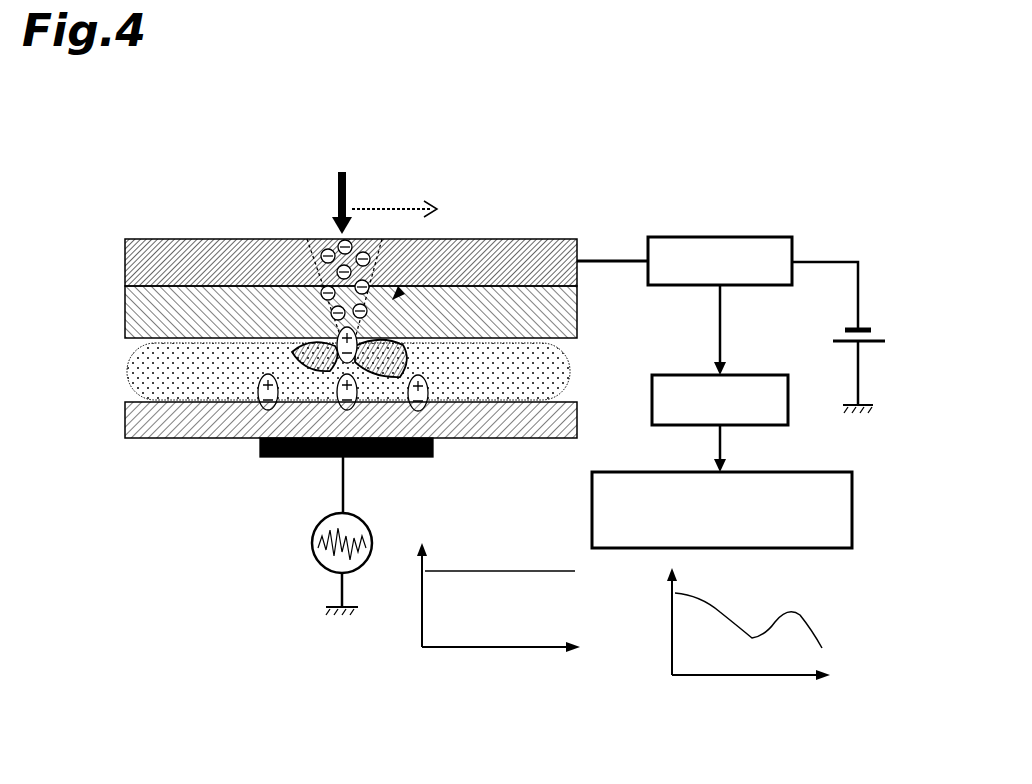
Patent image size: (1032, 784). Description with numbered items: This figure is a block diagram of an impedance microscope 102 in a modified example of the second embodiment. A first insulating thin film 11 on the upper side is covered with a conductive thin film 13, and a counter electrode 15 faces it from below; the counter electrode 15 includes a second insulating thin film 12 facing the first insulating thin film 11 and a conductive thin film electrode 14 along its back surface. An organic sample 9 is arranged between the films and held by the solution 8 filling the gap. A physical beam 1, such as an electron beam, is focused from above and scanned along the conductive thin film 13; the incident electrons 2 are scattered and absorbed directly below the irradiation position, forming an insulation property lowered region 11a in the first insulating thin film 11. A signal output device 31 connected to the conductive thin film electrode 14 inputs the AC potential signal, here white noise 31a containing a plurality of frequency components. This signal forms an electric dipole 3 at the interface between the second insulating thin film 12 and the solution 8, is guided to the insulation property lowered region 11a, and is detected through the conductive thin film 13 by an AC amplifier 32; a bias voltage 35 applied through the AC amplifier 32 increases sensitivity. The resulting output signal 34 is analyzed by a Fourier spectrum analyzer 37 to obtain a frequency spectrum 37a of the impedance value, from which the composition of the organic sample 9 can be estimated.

The physical beam 1 is at (336, 193).
The incident electrons 2 is at (325, 243).
The electric dipole 3 is at (425, 408).
The solution 8 is at (130, 370).
The organic sample 9 is at (410, 360).
The first insulating thin film 11 is at (128, 298).
The insulation property lowered region 11a is at (400, 294).
The second insulating thin film 12 is at (245, 440).
The conductive thin film 13 is at (173, 238).
The conductive thin film electrode 14 is at (295, 458).
The counter electrode 15 is at (218, 450).
The signal output device 31 is at (313, 553).
The white noise 31a is at (414, 652).
The AC amplifier 32 is at (684, 261).
The output signal 34 is at (720, 355).
The bias voltage 35 is at (875, 343).
The Fourier spectrum analyzer 37 is at (722, 486).
The frequency spectrum 37a is at (830, 628).
The impedance microscope 102 is at (645, 216).